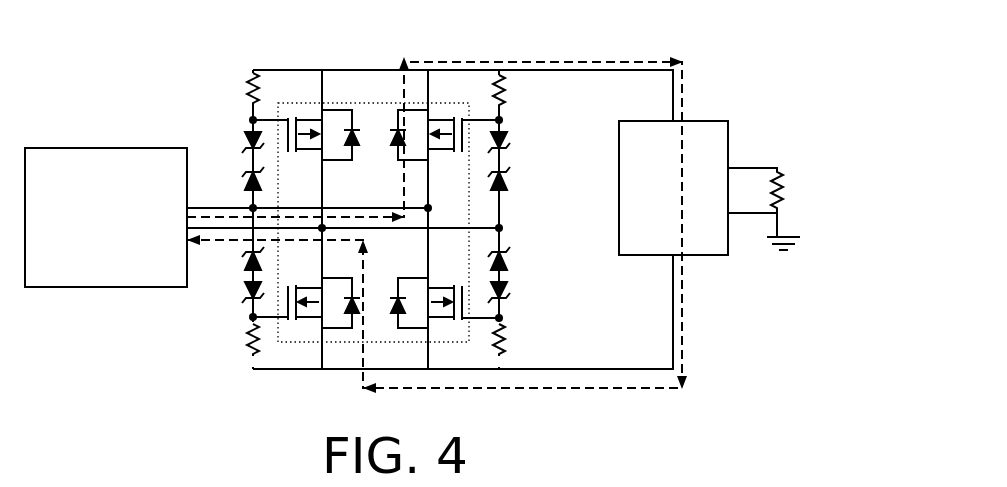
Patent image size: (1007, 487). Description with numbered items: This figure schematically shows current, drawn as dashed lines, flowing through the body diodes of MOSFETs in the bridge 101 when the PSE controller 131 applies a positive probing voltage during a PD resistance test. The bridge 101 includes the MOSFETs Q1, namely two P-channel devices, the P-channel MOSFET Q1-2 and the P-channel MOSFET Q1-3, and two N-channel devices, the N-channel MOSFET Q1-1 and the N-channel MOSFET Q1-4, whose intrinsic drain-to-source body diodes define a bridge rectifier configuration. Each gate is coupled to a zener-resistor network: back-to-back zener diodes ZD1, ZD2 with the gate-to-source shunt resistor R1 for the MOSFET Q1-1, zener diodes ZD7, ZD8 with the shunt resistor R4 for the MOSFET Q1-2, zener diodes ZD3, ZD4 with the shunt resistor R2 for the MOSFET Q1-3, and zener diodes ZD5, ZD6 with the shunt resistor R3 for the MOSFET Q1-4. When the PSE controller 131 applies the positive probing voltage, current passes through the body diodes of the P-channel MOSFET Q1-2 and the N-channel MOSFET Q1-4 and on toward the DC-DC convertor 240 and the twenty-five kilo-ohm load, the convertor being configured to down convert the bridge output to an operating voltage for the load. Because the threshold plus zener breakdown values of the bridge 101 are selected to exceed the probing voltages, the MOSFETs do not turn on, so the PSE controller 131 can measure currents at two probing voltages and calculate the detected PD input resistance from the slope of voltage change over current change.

The bridge 101 is at (378, 82).
The PSE controller 131 is at (106, 217).
The DC-DC convertor 240 is at (673, 188).
The MOSFETs Q1 is at (364, 219).
The N-channel MOSFET Q1-1 is at (421, 316).
The P-channel MOSFET Q1-2 is at (406, 145).
The P-channel MOSFET Q1-3 is at (316, 125).
The N-channel MOSFET Q1-4 is at (313, 313).
The gate-to-source shunt resistor R1 is at (517, 340).
The gate-to-source shunt resistor R2 is at (516, 91).
The gate-to-source shunt resistor R3 is at (234, 89).
The gate-to-source shunt resistor R4 is at (237, 340).
The zener diode ZD1 is at (520, 297).
The zener diode ZD2 is at (520, 260).
The zener diode ZD3 is at (520, 181).
The zener diode ZD4 is at (520, 146).
The zener diode ZD5 is at (231, 146).
The zener diode ZD6 is at (231, 180).
The zener diode ZD7 is at (231, 260).
The zener diode ZD8 is at (231, 296).